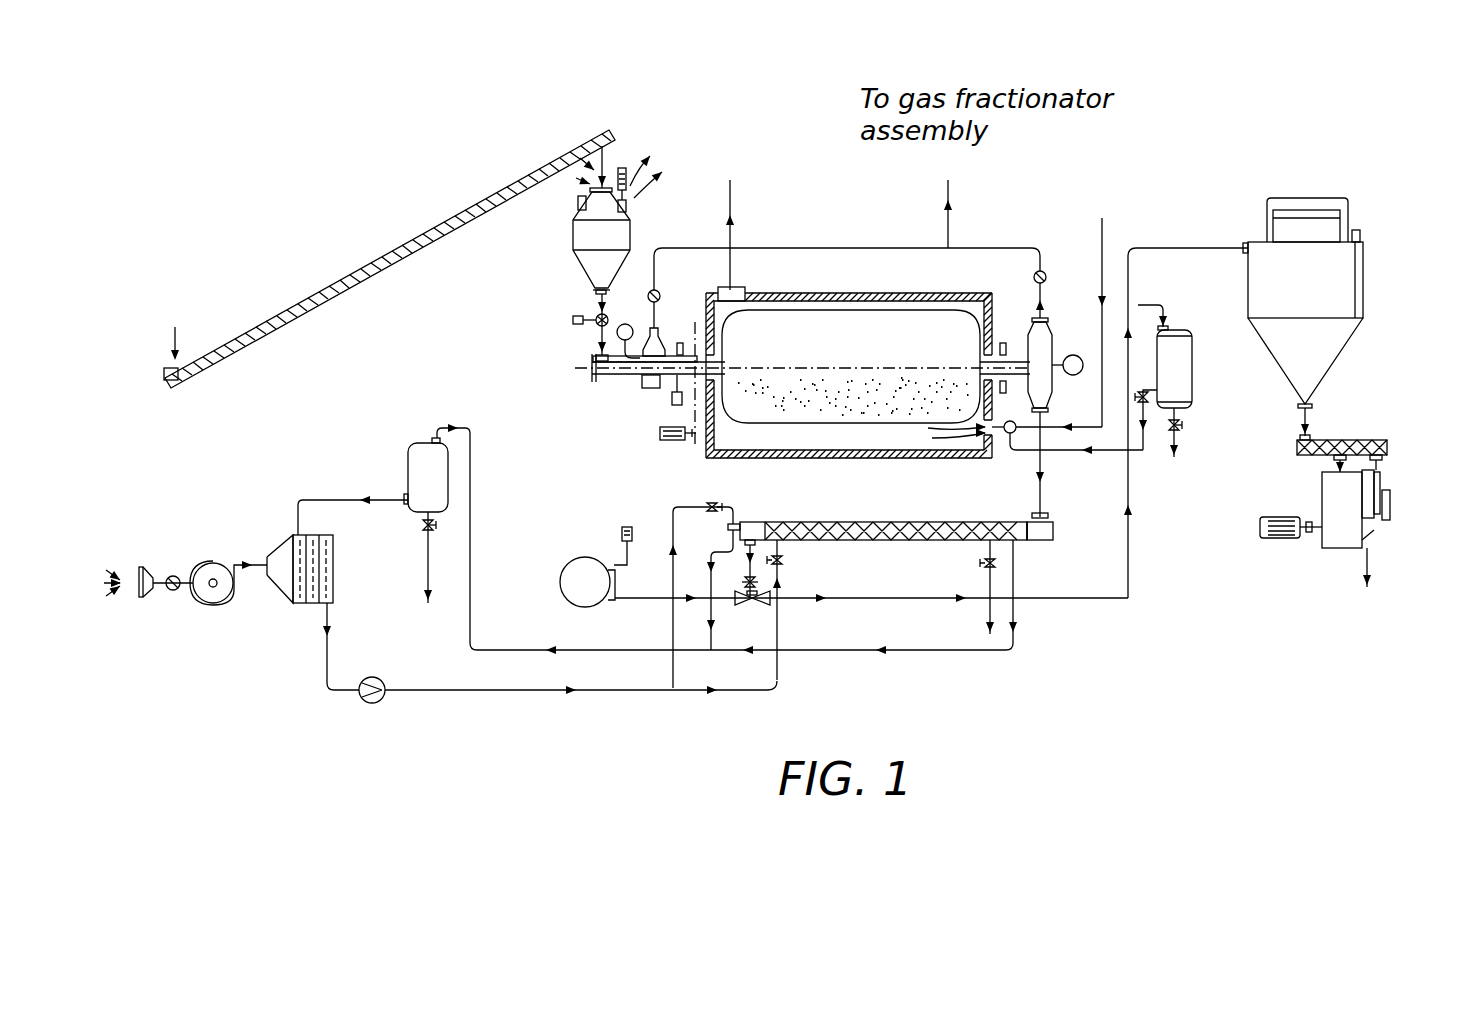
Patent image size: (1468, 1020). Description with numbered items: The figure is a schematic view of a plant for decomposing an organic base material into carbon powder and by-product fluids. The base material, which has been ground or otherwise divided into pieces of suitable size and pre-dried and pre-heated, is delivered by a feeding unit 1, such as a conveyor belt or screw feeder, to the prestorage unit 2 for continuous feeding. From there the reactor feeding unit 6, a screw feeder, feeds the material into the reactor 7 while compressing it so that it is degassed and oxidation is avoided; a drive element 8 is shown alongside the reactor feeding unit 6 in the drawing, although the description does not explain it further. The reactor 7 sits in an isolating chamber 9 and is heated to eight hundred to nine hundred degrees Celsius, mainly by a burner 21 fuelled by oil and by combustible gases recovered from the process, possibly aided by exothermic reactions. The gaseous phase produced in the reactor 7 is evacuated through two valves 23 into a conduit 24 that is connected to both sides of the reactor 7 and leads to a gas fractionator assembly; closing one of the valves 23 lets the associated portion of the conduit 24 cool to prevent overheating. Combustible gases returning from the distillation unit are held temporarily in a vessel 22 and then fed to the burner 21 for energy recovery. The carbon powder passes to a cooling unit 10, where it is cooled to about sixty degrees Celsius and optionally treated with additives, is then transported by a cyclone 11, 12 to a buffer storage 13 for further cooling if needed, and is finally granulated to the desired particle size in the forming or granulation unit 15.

The feeding unit 1 is at (358, 275).
The prestorage unit 2 is at (590, 233).
The reactor feeding unit 6 is at (622, 379).
The reactor 7 is at (876, 374).
The drive motor 8 is at (660, 437).
The isolating chamber 9 is at (850, 291).
The cooling unit 10 is at (920, 542).
The cyclone 11 is at (757, 607).
The cyclone 12 is at (581, 560).
The buffer storage 13 is at (1270, 246).
The forming or granulation unit 15 is at (1372, 474).
The burner 21 is at (1016, 436).
The vessel 22 is at (1186, 398).
The valves 23 is at (649, 292).
The conduit 24 is at (1000, 246).